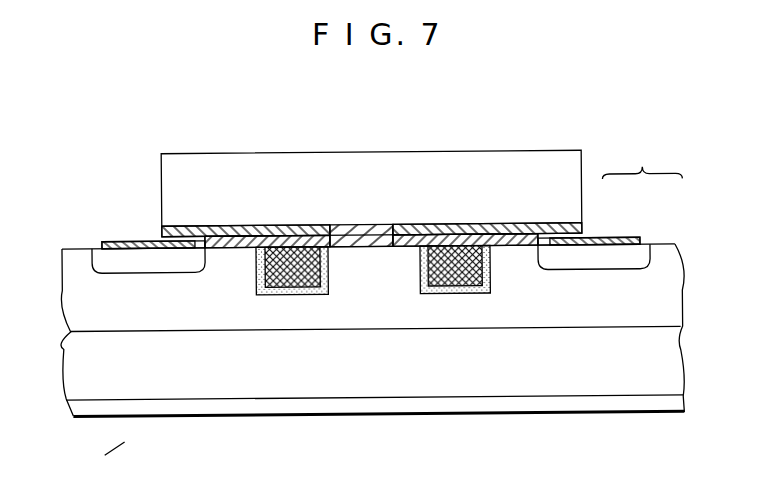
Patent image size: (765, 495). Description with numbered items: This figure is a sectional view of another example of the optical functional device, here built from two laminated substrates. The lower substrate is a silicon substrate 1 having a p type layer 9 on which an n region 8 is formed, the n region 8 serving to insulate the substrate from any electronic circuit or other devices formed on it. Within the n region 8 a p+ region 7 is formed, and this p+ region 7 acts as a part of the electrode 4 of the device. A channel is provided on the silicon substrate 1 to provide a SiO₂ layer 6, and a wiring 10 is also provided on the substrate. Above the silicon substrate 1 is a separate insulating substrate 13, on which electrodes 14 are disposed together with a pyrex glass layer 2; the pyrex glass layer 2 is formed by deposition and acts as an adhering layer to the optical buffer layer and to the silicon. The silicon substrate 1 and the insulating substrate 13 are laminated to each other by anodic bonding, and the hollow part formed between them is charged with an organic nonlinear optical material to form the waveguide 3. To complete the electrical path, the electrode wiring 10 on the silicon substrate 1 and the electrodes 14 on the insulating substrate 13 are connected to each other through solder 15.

The silicon substrate 1 is at (445, 480).
The pyrex glass layer 2 is at (402, 228).
The waveguide 3 is at (458, 264).
The electrode 4 is at (628, 161).
The SiO₂ layer 6 is at (468, 291).
The p+ region 7 is at (125, 253).
The n region 8 is at (213, 314).
The p type layer 9 is at (347, 368).
The wiring 10 is at (615, 239).
The insulating substrate 13 is at (356, 168).
The electrodes 14 is at (276, 223).
The solder 15 is at (571, 228).